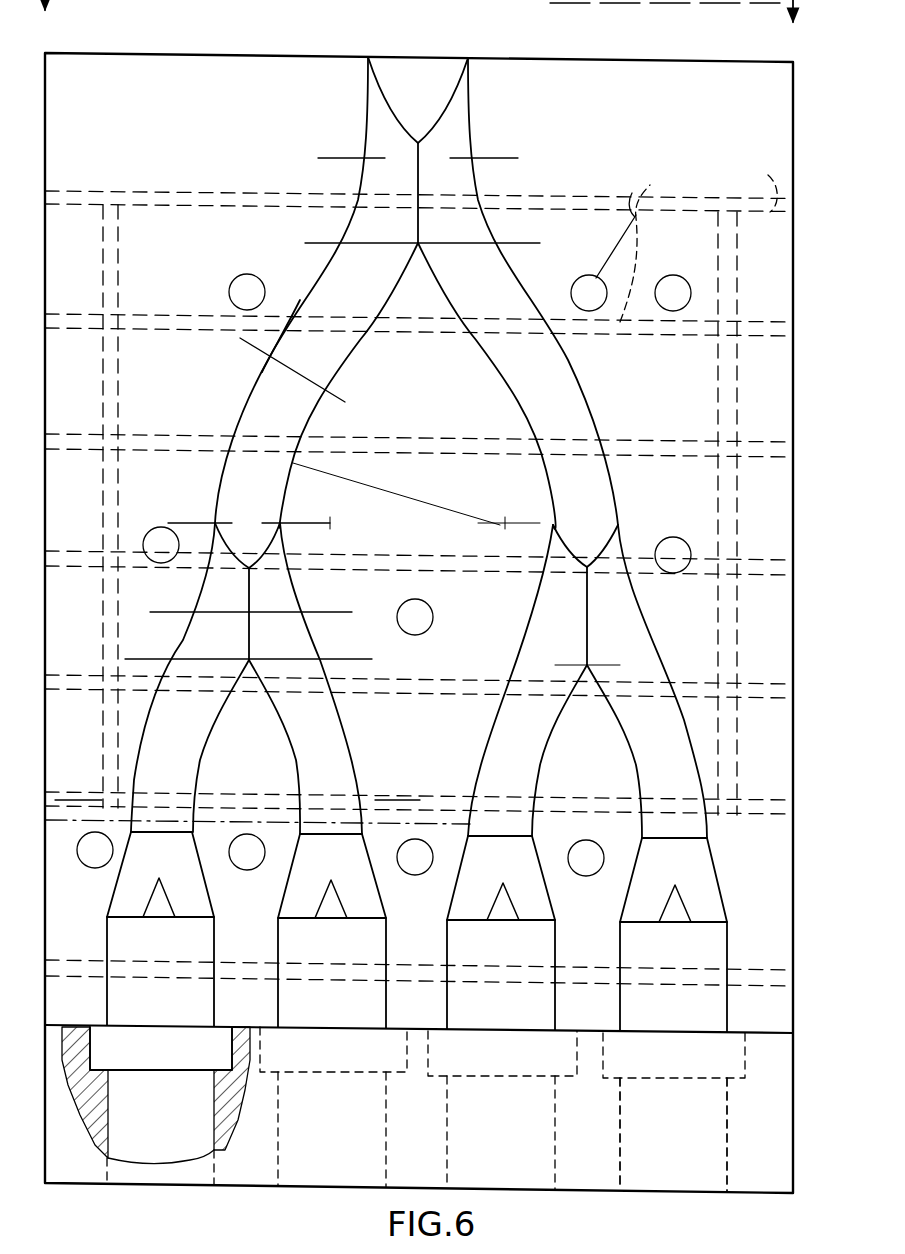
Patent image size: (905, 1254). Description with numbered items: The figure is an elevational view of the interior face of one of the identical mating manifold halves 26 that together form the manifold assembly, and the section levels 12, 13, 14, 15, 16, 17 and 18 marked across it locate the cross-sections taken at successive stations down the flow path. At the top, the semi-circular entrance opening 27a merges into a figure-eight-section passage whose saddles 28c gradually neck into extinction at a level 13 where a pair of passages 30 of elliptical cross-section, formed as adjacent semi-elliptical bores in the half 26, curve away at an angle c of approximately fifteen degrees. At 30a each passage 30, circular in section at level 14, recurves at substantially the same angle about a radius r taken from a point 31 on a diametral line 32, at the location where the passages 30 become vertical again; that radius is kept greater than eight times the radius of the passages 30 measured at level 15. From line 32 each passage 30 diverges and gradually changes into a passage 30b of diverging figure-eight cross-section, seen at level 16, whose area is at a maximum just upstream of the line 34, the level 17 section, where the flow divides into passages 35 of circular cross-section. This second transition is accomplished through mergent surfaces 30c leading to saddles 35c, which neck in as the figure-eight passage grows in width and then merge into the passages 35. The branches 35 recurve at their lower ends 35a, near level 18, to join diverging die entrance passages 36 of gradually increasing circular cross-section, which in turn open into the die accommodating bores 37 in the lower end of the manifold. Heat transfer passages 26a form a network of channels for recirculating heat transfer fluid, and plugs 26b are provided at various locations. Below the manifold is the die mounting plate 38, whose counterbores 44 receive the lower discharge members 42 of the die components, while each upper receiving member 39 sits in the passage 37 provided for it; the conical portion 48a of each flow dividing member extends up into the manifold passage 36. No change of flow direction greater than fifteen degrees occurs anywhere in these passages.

The section level 12 is at (500, 180).
The section level 13 is at (518, 265).
The section level 14 is at (350, 392).
The section level 15 is at (313, 545).
The section level 16 is at (337, 640).
The section level 17 is at (350, 685).
The section level 18 is at (388, 838).
The manifold half 26 is at (292, 54).
The heat transfer passages 26a is at (649, 242).
The plugs 26b is at (749, 180).
The inlet passage 27a is at (442, 74).
The saddles 28c is at (420, 143).
The passages of elliptical cross-section 30 is at (330, 362).
The recurve location 30a is at (490, 383).
The passages of diverging figure-eight cross-section 30b is at (545, 565).
The mergent surfaces 30c is at (622, 555).
The point 31 is at (331, 523).
The diametral line 32 is at (554, 520).
The line 34 is at (312, 668).
The passages of circular cross-section 35 is at (205, 704).
The recurved lower ends 35a is at (170, 797).
The saddles 35c is at (248, 600).
The die entrance passages 36 is at (110, 896).
The die accommodating bores 37 is at (106, 948).
The die mounting plate 38 is at (778, 1110).
The upper receiving member 39 is at (170, 1006).
The lower discharge member 42 is at (120, 1136).
The counterbores 44 is at (720, 1128).
The conical portion 48a is at (320, 906).